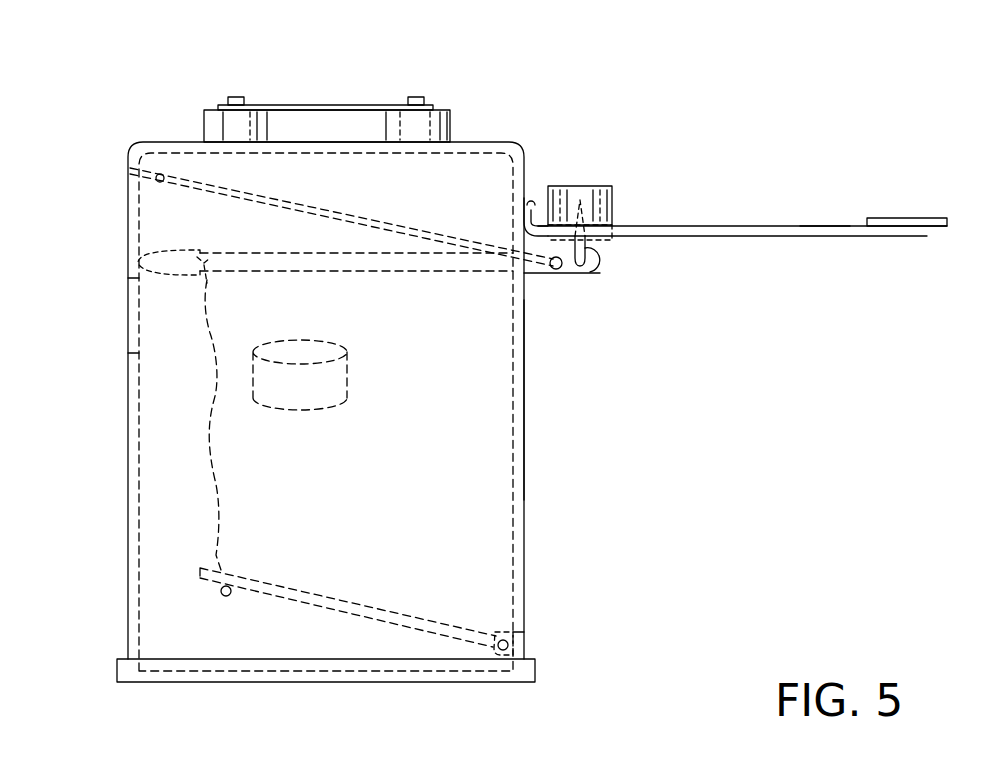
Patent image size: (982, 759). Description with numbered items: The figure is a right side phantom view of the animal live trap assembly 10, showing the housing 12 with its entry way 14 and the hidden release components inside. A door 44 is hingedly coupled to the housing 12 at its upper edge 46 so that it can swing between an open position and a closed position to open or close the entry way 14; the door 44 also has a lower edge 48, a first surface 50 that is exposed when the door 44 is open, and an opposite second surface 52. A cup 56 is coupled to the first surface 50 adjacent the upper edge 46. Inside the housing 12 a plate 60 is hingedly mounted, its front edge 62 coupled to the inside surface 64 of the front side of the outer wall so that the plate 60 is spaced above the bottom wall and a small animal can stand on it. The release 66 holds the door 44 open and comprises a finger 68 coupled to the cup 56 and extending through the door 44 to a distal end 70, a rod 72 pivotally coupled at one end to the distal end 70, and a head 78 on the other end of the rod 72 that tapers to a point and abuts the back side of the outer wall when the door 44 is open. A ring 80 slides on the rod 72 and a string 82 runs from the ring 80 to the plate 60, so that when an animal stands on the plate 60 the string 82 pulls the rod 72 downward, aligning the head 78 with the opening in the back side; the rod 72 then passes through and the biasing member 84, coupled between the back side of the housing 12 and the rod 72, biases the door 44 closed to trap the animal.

The animal live trap assembly 10 is at (95, 163).
The housing 12 is at (507, 143).
The entry way 14 is at (460, 438).
The door 44 is at (720, 226).
The upper edge 46 is at (523, 200).
The lower edge 48 is at (927, 228).
The first surface 50 is at (826, 226).
The second surface 52 is at (786, 236).
The cup 56 is at (612, 200).
The plate 60 is at (430, 625).
The front edge 62 is at (500, 632).
The inside surface 64 is at (513, 400).
The release 66 is at (300, 252).
The finger 68 is at (585, 237).
The distal end 70 is at (583, 273).
The rod 72 is at (237, 255).
The head 78 is at (170, 308).
The ring 80 is at (200, 265).
The string 82 is at (205, 434).
The biasing member 84 is at (332, 210).